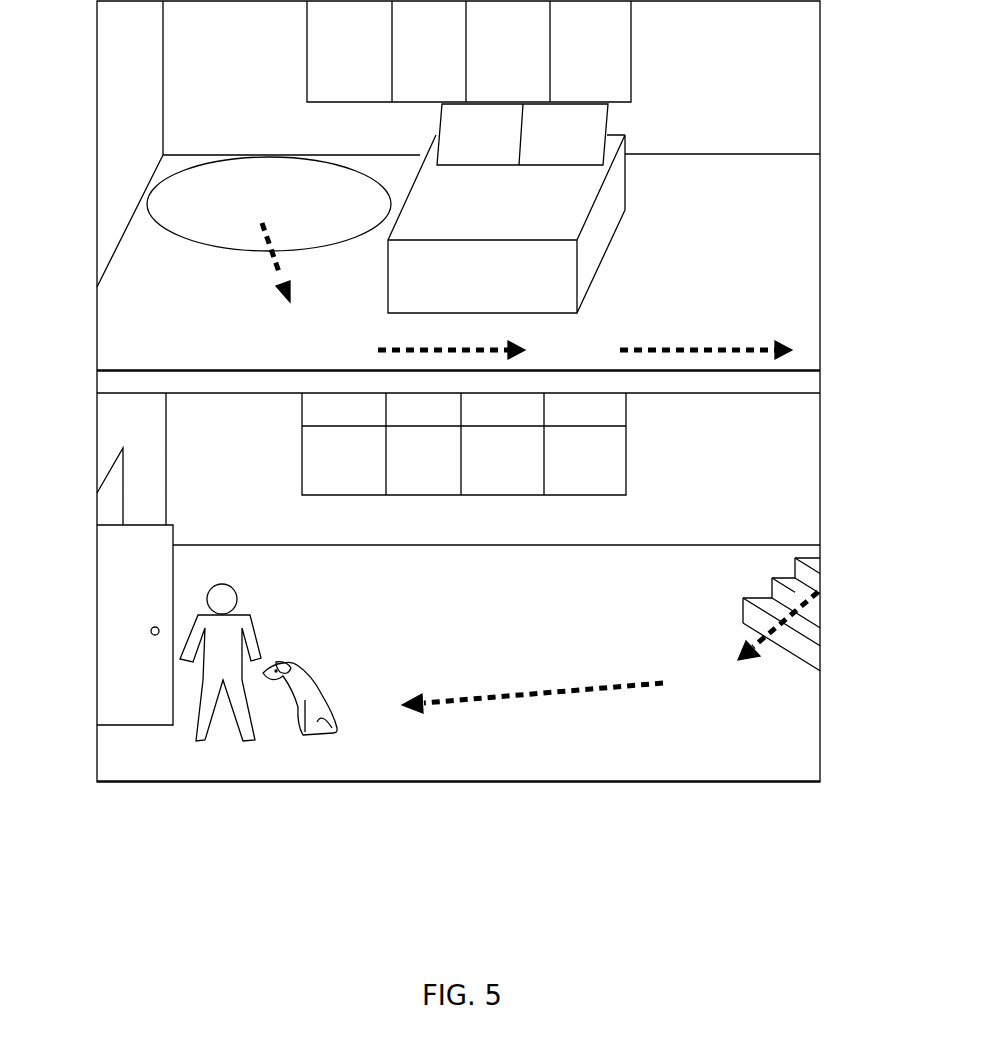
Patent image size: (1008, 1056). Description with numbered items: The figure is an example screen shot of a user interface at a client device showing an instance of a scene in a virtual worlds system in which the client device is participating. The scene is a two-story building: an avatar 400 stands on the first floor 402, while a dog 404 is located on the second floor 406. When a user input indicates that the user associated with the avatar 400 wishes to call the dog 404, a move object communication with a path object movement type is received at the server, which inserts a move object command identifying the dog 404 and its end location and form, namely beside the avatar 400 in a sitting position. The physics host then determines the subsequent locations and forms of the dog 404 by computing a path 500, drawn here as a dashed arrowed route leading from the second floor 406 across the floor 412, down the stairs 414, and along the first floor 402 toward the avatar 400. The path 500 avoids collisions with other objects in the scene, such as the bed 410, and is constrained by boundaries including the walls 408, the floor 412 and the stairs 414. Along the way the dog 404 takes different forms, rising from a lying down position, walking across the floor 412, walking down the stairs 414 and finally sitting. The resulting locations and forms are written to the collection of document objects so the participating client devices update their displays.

The avatar 400 is at (203, 720).
The first floor 402 is at (793, 713).
The dog 404 is at (318, 713).
The second floor 406 is at (782, 253).
The walls 408 is at (749, 482).
The bed 410 is at (515, 231).
The floor 412 is at (201, 351).
The stairs 414 is at (790, 645).
The path 500 is at (265, 278).